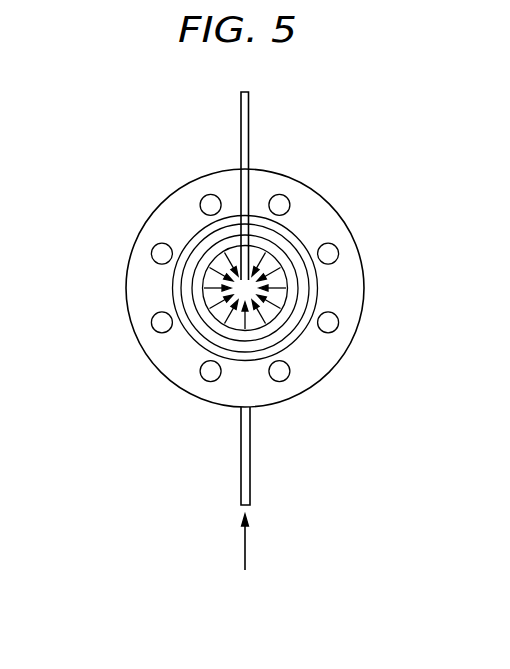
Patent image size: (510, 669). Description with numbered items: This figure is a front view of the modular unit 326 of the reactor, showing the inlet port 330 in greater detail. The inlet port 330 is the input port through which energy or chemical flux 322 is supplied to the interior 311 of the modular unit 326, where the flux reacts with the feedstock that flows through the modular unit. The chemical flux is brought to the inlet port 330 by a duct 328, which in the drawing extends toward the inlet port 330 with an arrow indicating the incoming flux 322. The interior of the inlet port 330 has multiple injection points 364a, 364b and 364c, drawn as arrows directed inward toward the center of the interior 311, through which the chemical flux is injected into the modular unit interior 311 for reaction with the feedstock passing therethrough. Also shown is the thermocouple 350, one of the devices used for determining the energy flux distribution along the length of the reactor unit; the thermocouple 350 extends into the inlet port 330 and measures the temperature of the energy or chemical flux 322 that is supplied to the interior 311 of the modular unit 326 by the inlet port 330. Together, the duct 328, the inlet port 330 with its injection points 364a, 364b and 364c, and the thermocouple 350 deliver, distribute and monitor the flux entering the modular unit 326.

The interior 311 is at (210, 278).
The energy or chemical flux 322 is at (245, 549).
The modular unit 326 is at (200, 247).
The duct 328 is at (250, 477).
The inlet port 330 is at (320, 210).
The thermocouple 350 is at (249, 112).
The injection point 364a is at (270, 320).
The injection point 364b is at (280, 302).
The injection point 364c is at (272, 257).